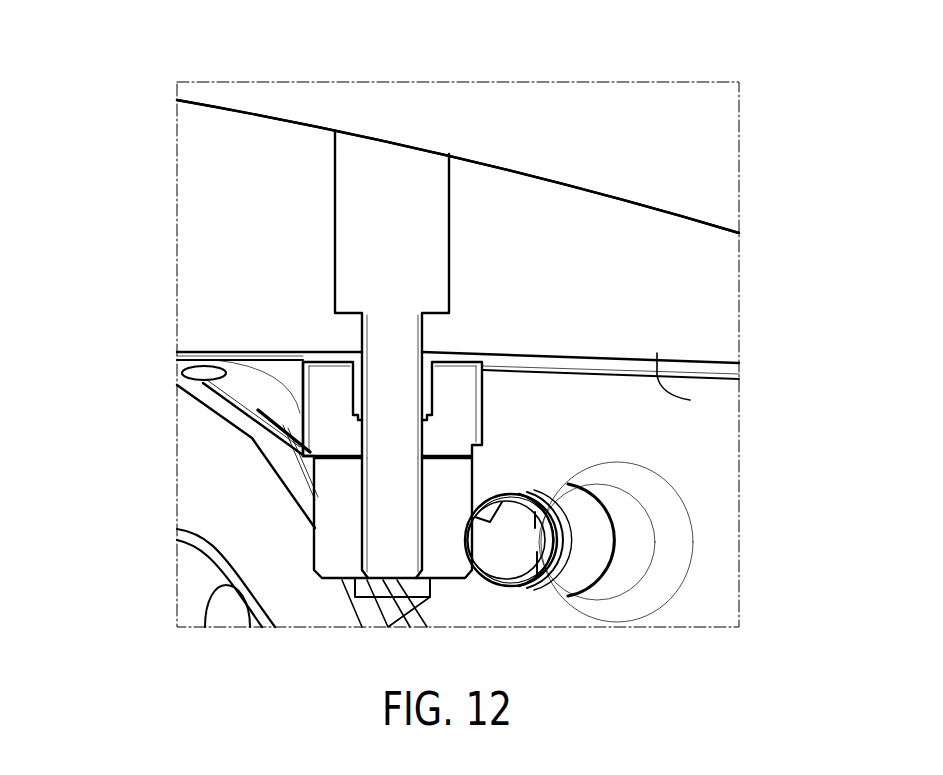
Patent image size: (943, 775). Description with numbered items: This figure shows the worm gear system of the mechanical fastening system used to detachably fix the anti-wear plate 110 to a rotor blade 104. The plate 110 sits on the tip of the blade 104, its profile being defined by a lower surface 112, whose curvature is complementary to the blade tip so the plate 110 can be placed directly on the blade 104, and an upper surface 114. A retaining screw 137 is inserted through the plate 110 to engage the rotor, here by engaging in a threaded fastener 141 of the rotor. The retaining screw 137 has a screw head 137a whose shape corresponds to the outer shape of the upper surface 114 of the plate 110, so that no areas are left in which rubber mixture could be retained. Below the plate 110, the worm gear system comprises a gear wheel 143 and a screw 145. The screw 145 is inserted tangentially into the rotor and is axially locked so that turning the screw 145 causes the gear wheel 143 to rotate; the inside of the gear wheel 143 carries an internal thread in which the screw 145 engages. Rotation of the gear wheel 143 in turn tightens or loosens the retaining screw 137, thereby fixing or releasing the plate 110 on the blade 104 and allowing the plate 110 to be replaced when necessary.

The blade 104 is at (688, 436).
The plate 110 is at (503, 210).
The lower surface 112 is at (690, 400).
The upper surface 114 is at (640, 202).
The retaining screw 137 is at (377, 437).
The screw head 137a is at (395, 185).
The threaded fastener 141 is at (483, 418).
The gear wheel 143 is at (445, 552).
The screw 145 is at (545, 553).